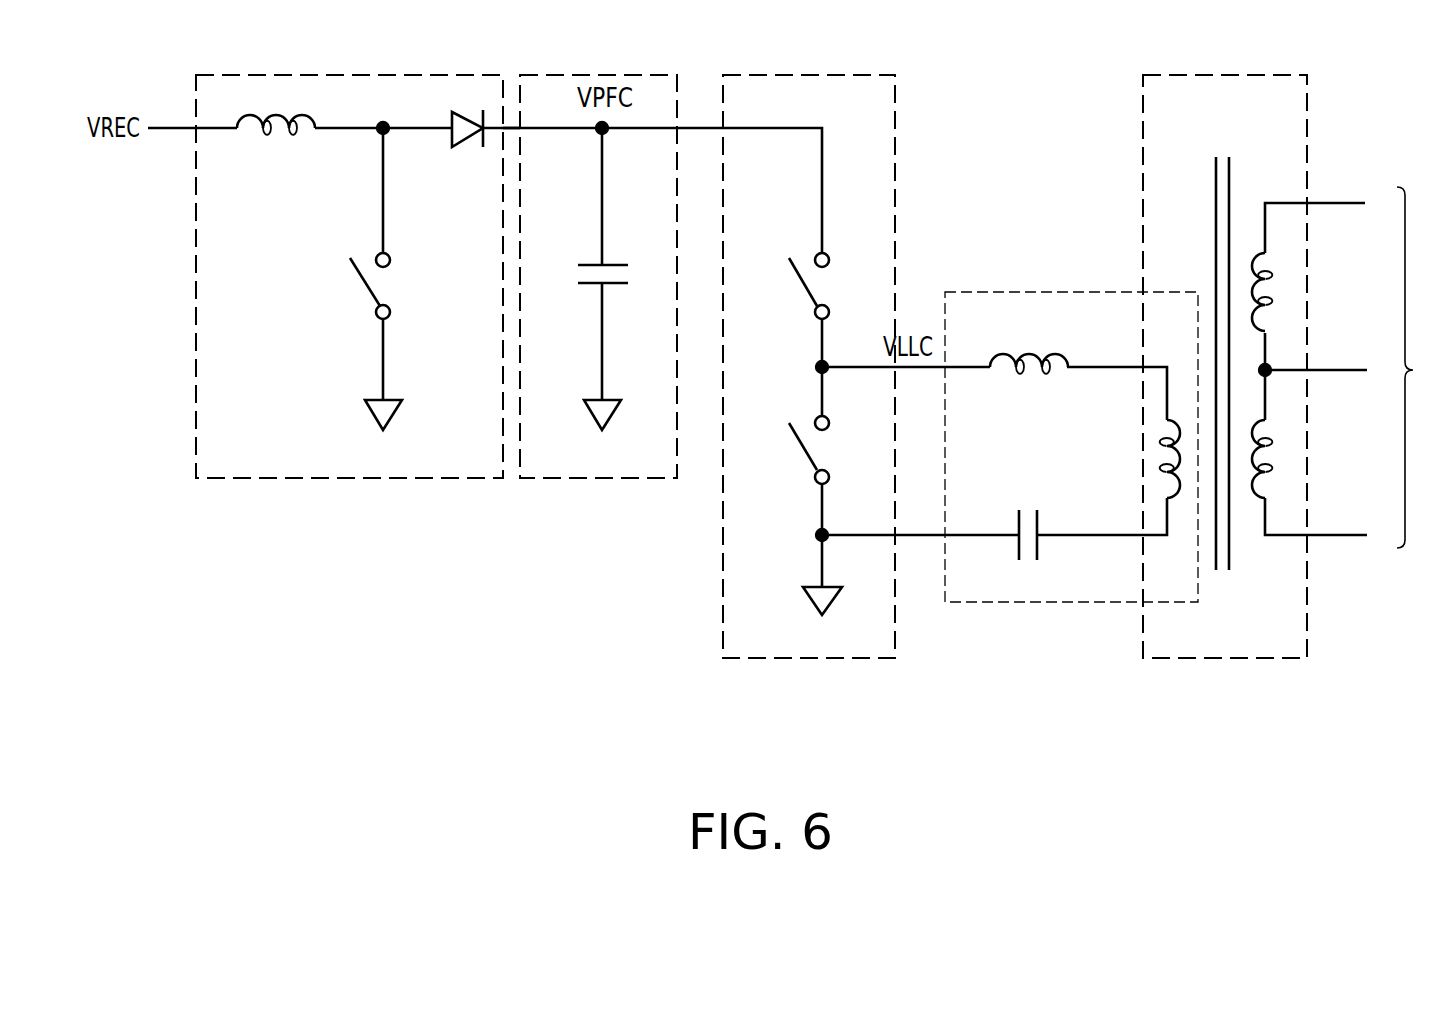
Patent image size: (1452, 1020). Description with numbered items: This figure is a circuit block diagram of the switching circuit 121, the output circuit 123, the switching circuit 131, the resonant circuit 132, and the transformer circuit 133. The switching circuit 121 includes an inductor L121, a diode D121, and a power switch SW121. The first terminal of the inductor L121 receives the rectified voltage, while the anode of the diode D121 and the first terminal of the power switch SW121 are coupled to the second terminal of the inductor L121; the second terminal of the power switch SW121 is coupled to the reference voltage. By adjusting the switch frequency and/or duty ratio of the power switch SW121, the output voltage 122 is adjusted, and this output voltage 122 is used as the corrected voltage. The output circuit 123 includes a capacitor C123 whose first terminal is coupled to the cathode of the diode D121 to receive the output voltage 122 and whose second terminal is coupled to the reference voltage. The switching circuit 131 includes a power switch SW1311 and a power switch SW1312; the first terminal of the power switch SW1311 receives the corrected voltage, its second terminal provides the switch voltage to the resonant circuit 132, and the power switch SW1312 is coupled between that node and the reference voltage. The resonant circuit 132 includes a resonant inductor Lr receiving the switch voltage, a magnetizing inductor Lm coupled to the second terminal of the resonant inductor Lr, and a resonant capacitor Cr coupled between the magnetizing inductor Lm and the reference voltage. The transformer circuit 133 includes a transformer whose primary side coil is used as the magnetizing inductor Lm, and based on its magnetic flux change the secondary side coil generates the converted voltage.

The switching circuit 121 is at (338, 480).
The output voltage 122 is at (512, 127).
The output circuit 123 is at (610, 480).
The switching circuit 131 is at (823, 662).
The resonant circuit 132 is at (1028, 603).
The transformer circuit 133 is at (1213, 662).
The inductor L121 is at (273, 142).
The diode D121 is at (463, 138).
The power switch SW121 is at (362, 288).
The capacitor C123 is at (633, 273).
The power switch SW1311 is at (797, 280).
The power switch SW1312 is at (797, 445).
The resonant inductor Lr is at (1035, 355).
The magnetizing inductor Lm is at (1157, 452).
The resonant capacitor Cr is at (1042, 520).